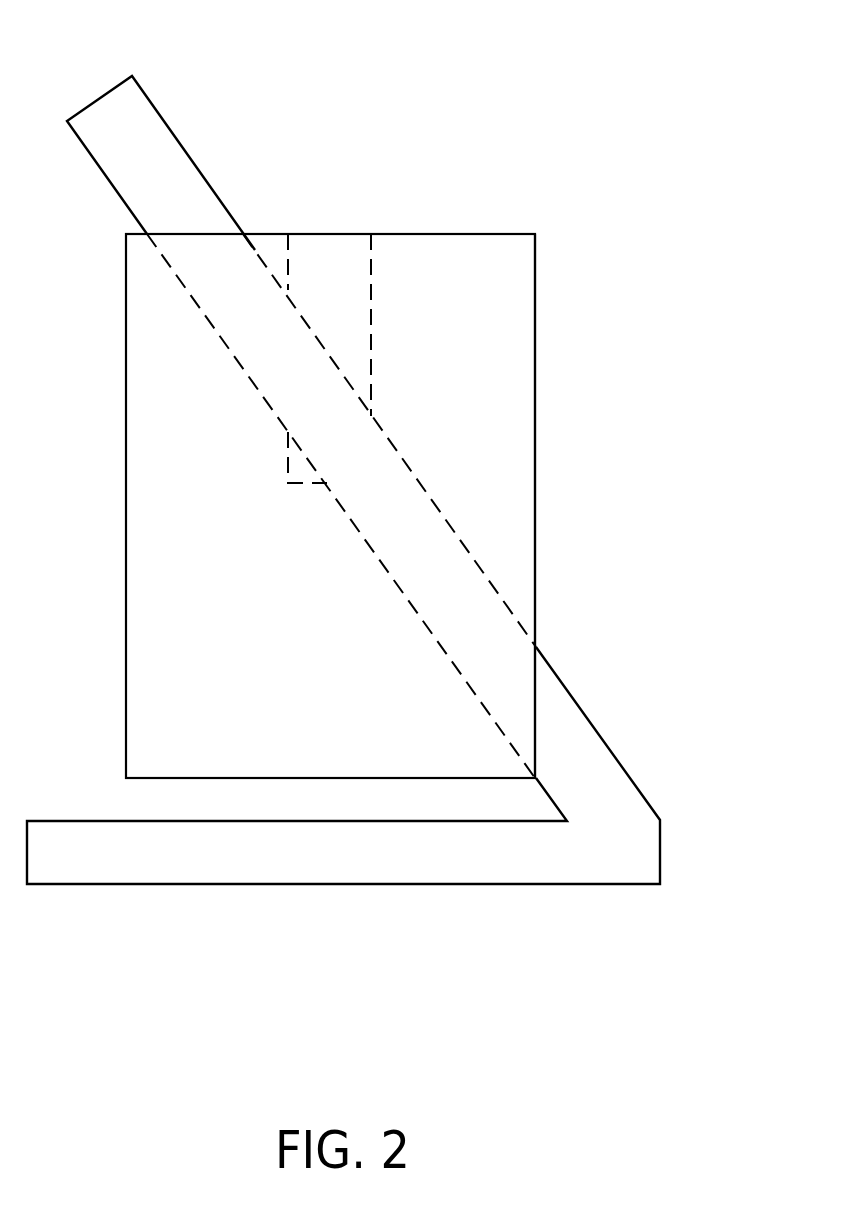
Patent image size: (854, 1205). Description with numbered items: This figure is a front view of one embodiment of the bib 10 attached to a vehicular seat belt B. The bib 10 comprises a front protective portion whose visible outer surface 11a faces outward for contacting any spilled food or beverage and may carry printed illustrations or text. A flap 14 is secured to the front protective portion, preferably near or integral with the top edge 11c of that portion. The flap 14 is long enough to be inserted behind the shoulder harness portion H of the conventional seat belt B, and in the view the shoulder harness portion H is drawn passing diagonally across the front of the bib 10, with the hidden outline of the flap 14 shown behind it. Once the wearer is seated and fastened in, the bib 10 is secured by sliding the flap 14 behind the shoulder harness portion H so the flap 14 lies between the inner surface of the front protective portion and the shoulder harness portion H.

The bib 10 is at (596, 535).
The visible outer surface 11a is at (505, 388).
The top edge 11c is at (463, 234).
The flap 14 is at (328, 273).
The shoulder harness portion H is at (145, 156).
The seat belt B is at (662, 734).